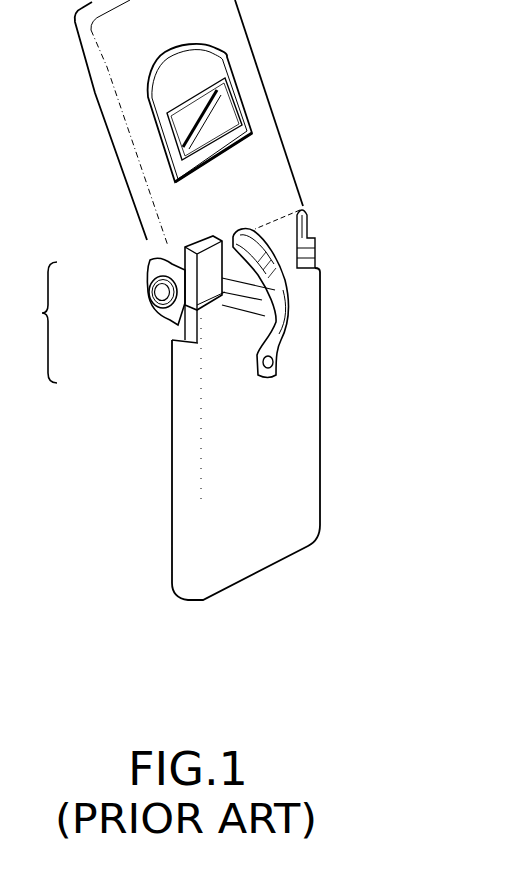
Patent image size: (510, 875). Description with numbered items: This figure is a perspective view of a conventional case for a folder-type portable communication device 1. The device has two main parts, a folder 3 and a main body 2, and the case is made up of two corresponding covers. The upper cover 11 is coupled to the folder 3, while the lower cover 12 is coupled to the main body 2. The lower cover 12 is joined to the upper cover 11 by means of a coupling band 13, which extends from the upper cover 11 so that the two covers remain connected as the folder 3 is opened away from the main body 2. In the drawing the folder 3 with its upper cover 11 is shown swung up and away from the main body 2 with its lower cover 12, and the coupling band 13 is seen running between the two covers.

The folder-type portable communication device 1 is at (39, 322).
The main body 2 is at (170, 336).
The folder 3 is at (152, 262).
The upper cover 11 is at (273, 162).
The lower cover 12 is at (300, 422).
The coupling band 13 is at (297, 303).